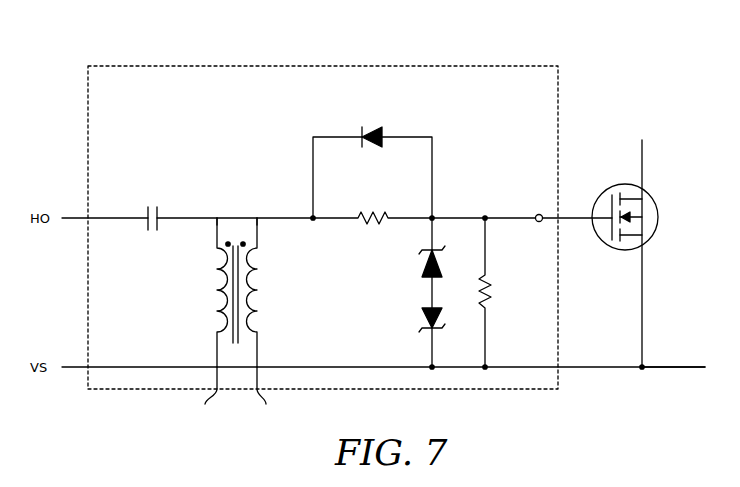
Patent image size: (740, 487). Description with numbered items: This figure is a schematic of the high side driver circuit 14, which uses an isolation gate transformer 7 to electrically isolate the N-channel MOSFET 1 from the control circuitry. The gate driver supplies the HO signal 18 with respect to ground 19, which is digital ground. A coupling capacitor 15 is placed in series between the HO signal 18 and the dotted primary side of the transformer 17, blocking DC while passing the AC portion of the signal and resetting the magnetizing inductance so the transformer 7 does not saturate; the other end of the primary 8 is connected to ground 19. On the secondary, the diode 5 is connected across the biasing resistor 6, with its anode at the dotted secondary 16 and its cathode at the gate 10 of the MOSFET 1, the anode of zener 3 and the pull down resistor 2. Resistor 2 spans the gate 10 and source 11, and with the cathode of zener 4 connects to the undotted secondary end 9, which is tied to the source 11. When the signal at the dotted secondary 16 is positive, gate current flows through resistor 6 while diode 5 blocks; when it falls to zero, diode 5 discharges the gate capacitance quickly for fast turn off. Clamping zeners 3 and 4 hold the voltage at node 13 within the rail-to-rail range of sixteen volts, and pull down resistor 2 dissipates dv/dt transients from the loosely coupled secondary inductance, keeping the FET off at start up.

The N-channel MOSFET 1 is at (650, 197).
The pull down resistor 2 is at (495, 297).
The clamping zener diode 3 is at (420, 253).
The clamping zener diode 4 is at (420, 325).
The diode 5 is at (368, 128).
The biasing resistor 6 is at (372, 212).
The isolation transformer 7 is at (222, 282).
The other end of primary side of the transformer 8 is at (209, 397).
The undotted end of secondary 9 is at (263, 397).
The gate 10 is at (540, 213).
The source 11 is at (676, 365).
The gate node 13 is at (485, 214).
The driver circuit 14 is at (272, 65).
The coupling capacitor 15 is at (150, 212).
The dotted secondary 16 is at (258, 215).
The dotted side primary side of the transformer 17 is at (214, 215).
The HO signal 18 is at (75, 215).
The ground 19 is at (75, 369).